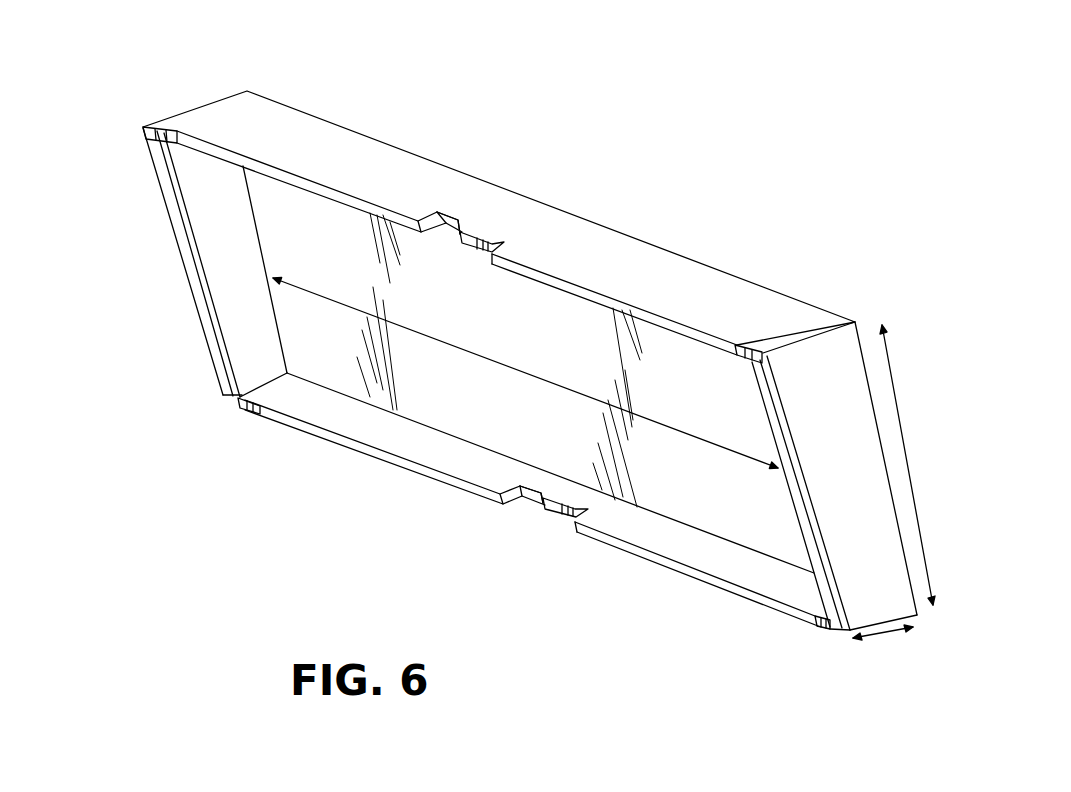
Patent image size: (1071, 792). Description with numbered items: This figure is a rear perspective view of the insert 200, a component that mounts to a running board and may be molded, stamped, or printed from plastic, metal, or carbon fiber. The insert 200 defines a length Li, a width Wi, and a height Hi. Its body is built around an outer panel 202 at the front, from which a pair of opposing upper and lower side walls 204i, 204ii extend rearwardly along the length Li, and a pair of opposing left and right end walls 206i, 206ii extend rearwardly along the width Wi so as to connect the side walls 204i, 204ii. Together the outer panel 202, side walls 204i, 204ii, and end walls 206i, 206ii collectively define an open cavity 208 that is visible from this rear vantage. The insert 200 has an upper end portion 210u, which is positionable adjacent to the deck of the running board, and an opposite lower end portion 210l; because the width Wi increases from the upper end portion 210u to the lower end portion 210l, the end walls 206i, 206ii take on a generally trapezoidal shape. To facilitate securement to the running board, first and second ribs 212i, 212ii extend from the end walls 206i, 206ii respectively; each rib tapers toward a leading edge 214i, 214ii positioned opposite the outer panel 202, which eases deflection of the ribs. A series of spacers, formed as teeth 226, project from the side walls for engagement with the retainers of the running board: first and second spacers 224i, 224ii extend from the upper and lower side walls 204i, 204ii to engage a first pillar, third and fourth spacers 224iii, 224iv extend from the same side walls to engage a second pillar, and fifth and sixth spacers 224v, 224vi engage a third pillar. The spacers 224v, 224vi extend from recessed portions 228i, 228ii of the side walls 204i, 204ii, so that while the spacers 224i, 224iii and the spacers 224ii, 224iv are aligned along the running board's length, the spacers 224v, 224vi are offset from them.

The insert 200 is at (490, 372).
The outer panel 202 is at (499, 200).
The upper side wall 204i is at (330, 412).
The lower side wall 204ii is at (397, 175).
The left end wall 206i is at (160, 262).
The right end wall 206ii is at (749, 462).
The cavity 208 is at (582, 324).
The lower end portion 210l is at (309, 135).
The upper end portion 210u is at (775, 580).
The first rib 212i is at (168, 198).
The second rib 212ii is at (797, 485).
The first leading edge 214i is at (186, 291).
The second leading edge 214ii is at (797, 513).
The first spacer 224i is at (240, 418).
The second spacer 224ii is at (162, 122).
The third spacer 224iii is at (830, 650).
The fourth spacer 224iv is at (753, 344).
The fifth spacer 224v is at (558, 492).
The sixth spacer 224vi is at (479, 221).
The teeth 226 is at (147, 133).
The first recessed portion 228i is at (530, 498).
The second recessed portion 228ii is at (445, 235).
The length Li is at (525, 373).
The height Hi is at (907, 465).
The width Wi is at (886, 636).